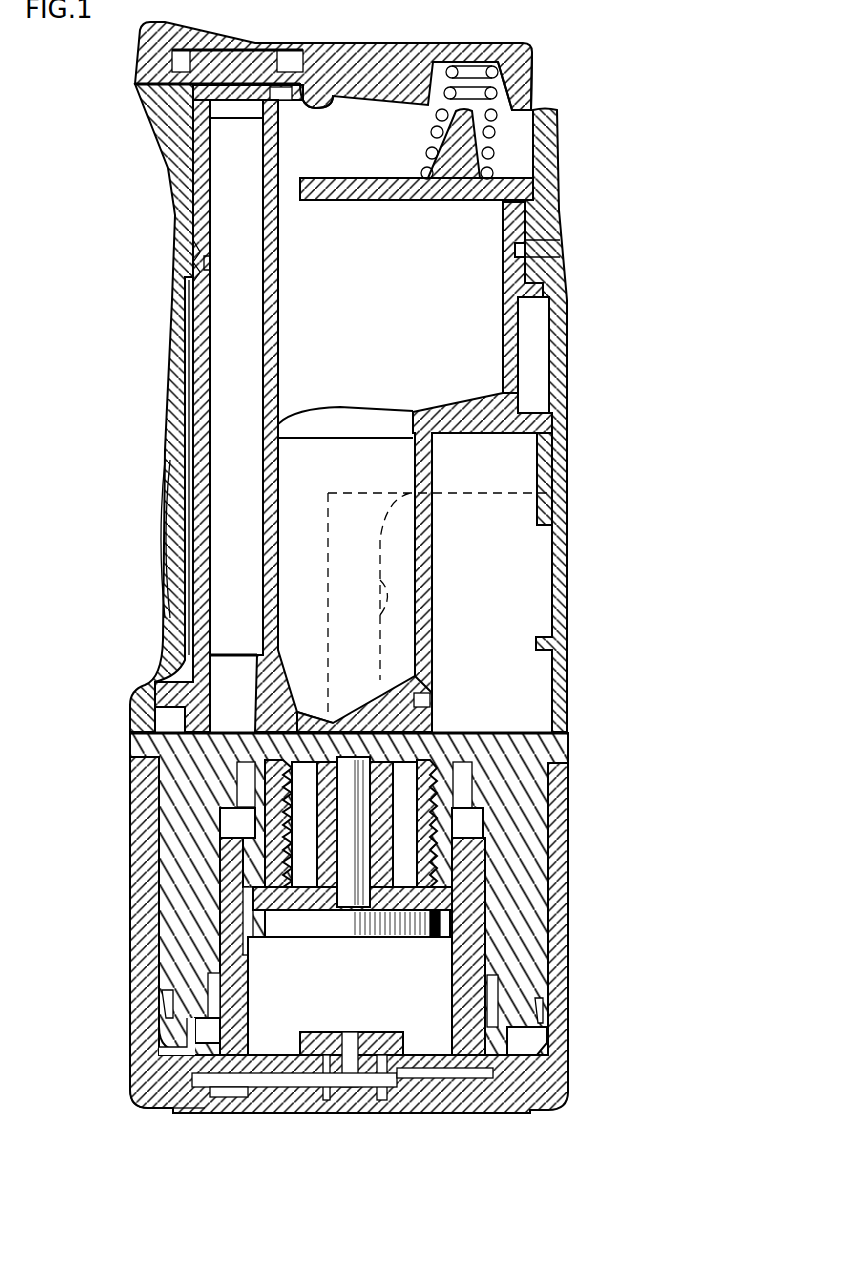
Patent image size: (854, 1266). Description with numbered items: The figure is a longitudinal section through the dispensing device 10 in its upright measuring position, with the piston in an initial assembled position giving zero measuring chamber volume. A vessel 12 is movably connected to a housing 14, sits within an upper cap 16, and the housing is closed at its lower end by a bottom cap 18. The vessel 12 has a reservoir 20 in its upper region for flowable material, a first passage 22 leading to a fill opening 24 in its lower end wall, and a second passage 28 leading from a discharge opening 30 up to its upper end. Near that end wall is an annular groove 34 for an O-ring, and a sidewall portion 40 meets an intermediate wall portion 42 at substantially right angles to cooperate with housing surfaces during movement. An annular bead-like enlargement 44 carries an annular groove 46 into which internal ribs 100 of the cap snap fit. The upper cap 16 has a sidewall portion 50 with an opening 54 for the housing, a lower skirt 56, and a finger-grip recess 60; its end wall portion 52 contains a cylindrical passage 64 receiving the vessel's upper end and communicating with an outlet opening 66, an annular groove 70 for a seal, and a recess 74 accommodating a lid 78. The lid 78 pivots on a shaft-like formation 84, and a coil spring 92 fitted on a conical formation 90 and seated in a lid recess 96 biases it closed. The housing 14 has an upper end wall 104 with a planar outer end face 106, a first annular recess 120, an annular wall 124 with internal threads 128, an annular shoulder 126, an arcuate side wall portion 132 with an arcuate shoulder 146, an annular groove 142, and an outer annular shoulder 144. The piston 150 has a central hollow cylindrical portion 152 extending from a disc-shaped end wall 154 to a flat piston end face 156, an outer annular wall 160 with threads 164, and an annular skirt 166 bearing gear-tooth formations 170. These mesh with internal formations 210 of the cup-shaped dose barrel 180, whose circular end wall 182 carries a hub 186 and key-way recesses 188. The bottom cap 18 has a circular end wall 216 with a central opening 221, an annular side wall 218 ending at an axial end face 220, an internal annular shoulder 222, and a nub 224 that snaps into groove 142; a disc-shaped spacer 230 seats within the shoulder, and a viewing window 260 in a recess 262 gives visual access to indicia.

The device 10 is at (68, 208).
The vessel 12 is at (528, 358).
The housing 14 is at (578, 618).
The upper cap 16 is at (568, 194).
The bottom cap 18 is at (120, 847).
The reservoir 20 is at (372, 311).
The first passage 22 is at (310, 546).
The fill opening 24 is at (362, 730).
The second passage 28 is at (242, 523).
The discharge opening 30 is at (258, 710).
The annular groove 34 is at (400, 724).
The sidewall portion 40 is at (435, 582).
The intermediate wall portion 42 is at (495, 445).
The annular bead-like enlargement 44 is at (190, 241).
The annular groove 46 is at (212, 263).
The sidewall portion 50 is at (567, 295).
The end wall portion 52 is at (150, 128).
The opening 54 is at (455, 518).
The annular radially extending skirt 56 is at (150, 672).
The recess 60 is at (160, 540).
The cylindrical passage 64 is at (200, 170).
The outlet opening 66 is at (218, 109).
The annular groove 70 is at (136, 84).
The recess 74 is at (372, 178).
The lid 78 is at (380, 43).
The shaft-like formation 84 is at (333, 105).
The conical formation 90 is at (452, 207).
The coil spring 92 is at (497, 139).
The recess 96 is at (510, 120).
The internal ribs 100 is at (500, 265).
The upper end wall 104 is at (550, 762).
The planar outer end face 106 is at (517, 732).
The first annular recess 120 is at (403, 738).
The annular wall 124 is at (250, 867).
The annular shoulder 126 is at (351, 823).
The internal threads 128 is at (607, 895).
The arcuate side wall portion 132 is at (570, 668).
The annular groove 142 is at (165, 1005).
The outer annular shoulder 144 is at (568, 782).
The arcuate shoulder 146 is at (567, 487).
The piston 150 is at (311, 947).
The central hollow cylindrical portion 152 is at (330, 912).
The end wall 154 is at (333, 938).
The piston end face 156 is at (330, 712).
The outer annular wall 160 is at (354, 824).
The threads 164 is at (437, 806).
The annular skirt 166 is at (240, 945).
The formations 170 is at (250, 905).
The dose barrel 180 is at (453, 1090).
The circular end wall 182 is at (327, 1075).
The hub 186 is at (355, 1032).
The recesses 188 is at (360, 1090).
The formations 210 is at (250, 1028).
The circular end wall 216 is at (480, 1115).
The annular side wall 218 is at (125, 800).
The axial end face 220 is at (128, 768).
The central opening 221 is at (420, 1078).
The internal annular shoulder 222 is at (140, 1090).
The nub 224 is at (195, 1030).
The spacer 230 is at (270, 1078).
The viewing window 260 is at (235, 1087).
The recess 262 is at (205, 1113).